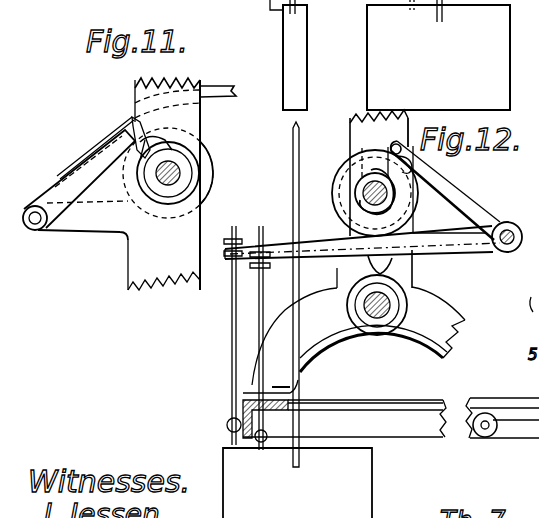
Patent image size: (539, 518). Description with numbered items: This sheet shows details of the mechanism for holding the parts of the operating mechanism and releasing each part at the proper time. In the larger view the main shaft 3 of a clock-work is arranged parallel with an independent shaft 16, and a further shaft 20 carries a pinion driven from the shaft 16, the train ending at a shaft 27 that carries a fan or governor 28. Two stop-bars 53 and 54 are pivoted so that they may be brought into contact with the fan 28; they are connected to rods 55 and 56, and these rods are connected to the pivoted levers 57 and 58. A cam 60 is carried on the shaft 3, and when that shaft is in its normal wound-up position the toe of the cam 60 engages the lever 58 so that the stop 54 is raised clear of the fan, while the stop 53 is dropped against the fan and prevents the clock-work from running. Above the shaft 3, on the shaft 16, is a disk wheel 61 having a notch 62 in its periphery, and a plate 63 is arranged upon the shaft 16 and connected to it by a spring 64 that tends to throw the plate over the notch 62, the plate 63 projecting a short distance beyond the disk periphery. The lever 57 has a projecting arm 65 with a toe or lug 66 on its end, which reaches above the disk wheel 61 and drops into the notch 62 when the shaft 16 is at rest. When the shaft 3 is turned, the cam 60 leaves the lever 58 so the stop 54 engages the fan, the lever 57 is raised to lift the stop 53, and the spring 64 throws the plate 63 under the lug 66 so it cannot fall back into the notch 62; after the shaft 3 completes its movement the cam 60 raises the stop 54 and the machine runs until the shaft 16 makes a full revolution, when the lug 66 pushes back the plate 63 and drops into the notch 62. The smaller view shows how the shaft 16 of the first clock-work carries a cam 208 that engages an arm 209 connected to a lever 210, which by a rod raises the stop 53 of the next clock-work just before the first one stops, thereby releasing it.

In FIG. 12, the shaft 3 is at (367, 318).
In FIG. 12, the independent shaft 16 is at (378, 206).
In FIG. 11, the shaft 20 is at (158, 182).
In FIG. 12, the shaft 27 is at (294, 162).
In FIG. 12, the fan or governor 28 is at (300, 50).
In FIG. 12, the stop-bar 53 is at (268, 0).
In FIG. 12, the stop-bar 54 is at (374, 262).
In FIG. 12, the rod 55 is at (268, 338).
In FIG. 12, the rod 56 is at (232, 322).
In FIG. 12, the pivoted lever 57 is at (318, 256).
In FIG. 12, the pivoted lever 58 is at (322, 234).
In FIG. 12, the cam 60 is at (413, 268).
In FIG. 12, the disk wheel 61 is at (346, 186).
In FIG. 12, the notch 62 is at (404, 168).
In FIG. 12, the plate 63 is at (368, 150).
In FIG. 12, the spring 64 is at (370, 172).
In FIG. 12, the projecting arm 65 is at (464, 189).
In FIG. 12, the toe or lug 66 is at (395, 146).
In FIG. 11, the cam 208 is at (150, 143).
In FIG. 11, the arm 209 is at (90, 163).
In FIG. 11, the lever 210 is at (133, 115).